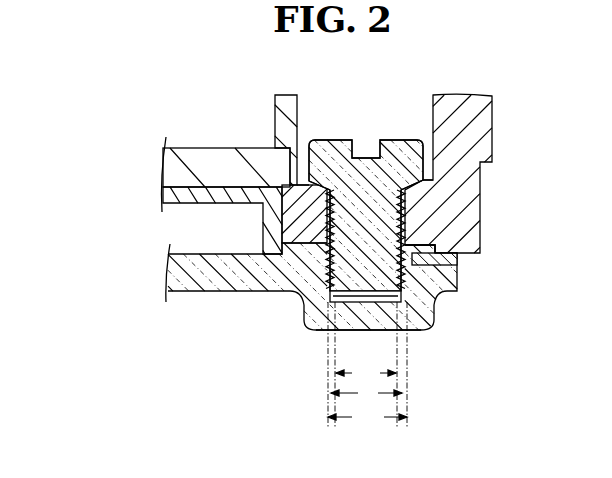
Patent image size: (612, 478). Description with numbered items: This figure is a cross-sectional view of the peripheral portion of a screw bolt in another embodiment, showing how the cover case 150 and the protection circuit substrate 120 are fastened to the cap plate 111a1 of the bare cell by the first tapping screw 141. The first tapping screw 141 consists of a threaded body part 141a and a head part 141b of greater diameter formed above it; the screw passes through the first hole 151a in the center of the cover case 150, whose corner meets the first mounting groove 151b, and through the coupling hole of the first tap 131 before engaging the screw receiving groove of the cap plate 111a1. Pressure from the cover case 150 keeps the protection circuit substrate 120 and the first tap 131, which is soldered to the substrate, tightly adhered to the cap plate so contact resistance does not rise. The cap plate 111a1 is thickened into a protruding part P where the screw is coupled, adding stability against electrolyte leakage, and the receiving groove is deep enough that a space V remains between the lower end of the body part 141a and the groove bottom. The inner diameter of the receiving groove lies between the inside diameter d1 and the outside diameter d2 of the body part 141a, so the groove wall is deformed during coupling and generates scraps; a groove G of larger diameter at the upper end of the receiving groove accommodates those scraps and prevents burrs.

The protection circuit substrate 120 is at (206, 140).
The first tap 131 is at (170, 195).
The cap plate 111a1 is at (208, 282).
The first tapping screw 141 is at (410, 132).
The body part 141a is at (360, 228).
The head part 141b is at (397, 140).
The cover case 150 is at (478, 127).
The first hole 151a is at (409, 223).
The first mounting groove 151b is at (428, 171).
The groove G is at (457, 262).
The space V is at (362, 297).
The protruding part P is at (383, 336).
The inside diameter d1 is at (366, 374).
The outside diameter d2 is at (367, 418).